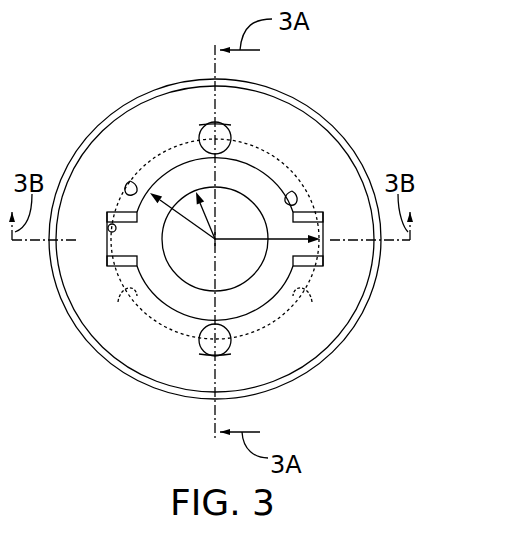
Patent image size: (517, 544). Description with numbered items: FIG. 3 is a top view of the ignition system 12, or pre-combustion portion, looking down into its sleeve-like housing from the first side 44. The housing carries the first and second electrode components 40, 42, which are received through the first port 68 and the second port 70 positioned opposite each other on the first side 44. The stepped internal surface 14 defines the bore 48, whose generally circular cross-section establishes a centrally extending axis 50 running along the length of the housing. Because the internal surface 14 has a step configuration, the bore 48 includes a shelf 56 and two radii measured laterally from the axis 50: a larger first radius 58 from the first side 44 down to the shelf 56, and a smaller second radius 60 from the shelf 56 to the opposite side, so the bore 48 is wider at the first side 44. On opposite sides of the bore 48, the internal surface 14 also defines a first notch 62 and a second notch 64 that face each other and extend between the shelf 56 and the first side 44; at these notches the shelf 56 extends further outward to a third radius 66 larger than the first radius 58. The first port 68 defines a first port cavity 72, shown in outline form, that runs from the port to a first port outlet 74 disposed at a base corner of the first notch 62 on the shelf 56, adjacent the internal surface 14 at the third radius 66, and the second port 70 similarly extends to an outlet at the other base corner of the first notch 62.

The ignition system 12 is at (115, 64).
The internal surface 14 is at (112, 215).
The first electrode component 40 is at (238, 114).
The second electrode component 42 is at (242, 368).
The first side 44 is at (272, 108).
The bore 48 is at (232, 272).
The axis 50 is at (214, 240).
The shelf 56 is at (337, 168).
The first radius 58 is at (110, 250).
The second radius 60 is at (200, 212).
The first notch 62 is at (110, 258).
The second notch 64 is at (323, 262).
The third radius 66 is at (243, 243).
The first port 68 is at (205, 125).
The second port 70 is at (207, 352).
The first port cavity 72 is at (135, 290).
The first port outlet 74 is at (130, 181).